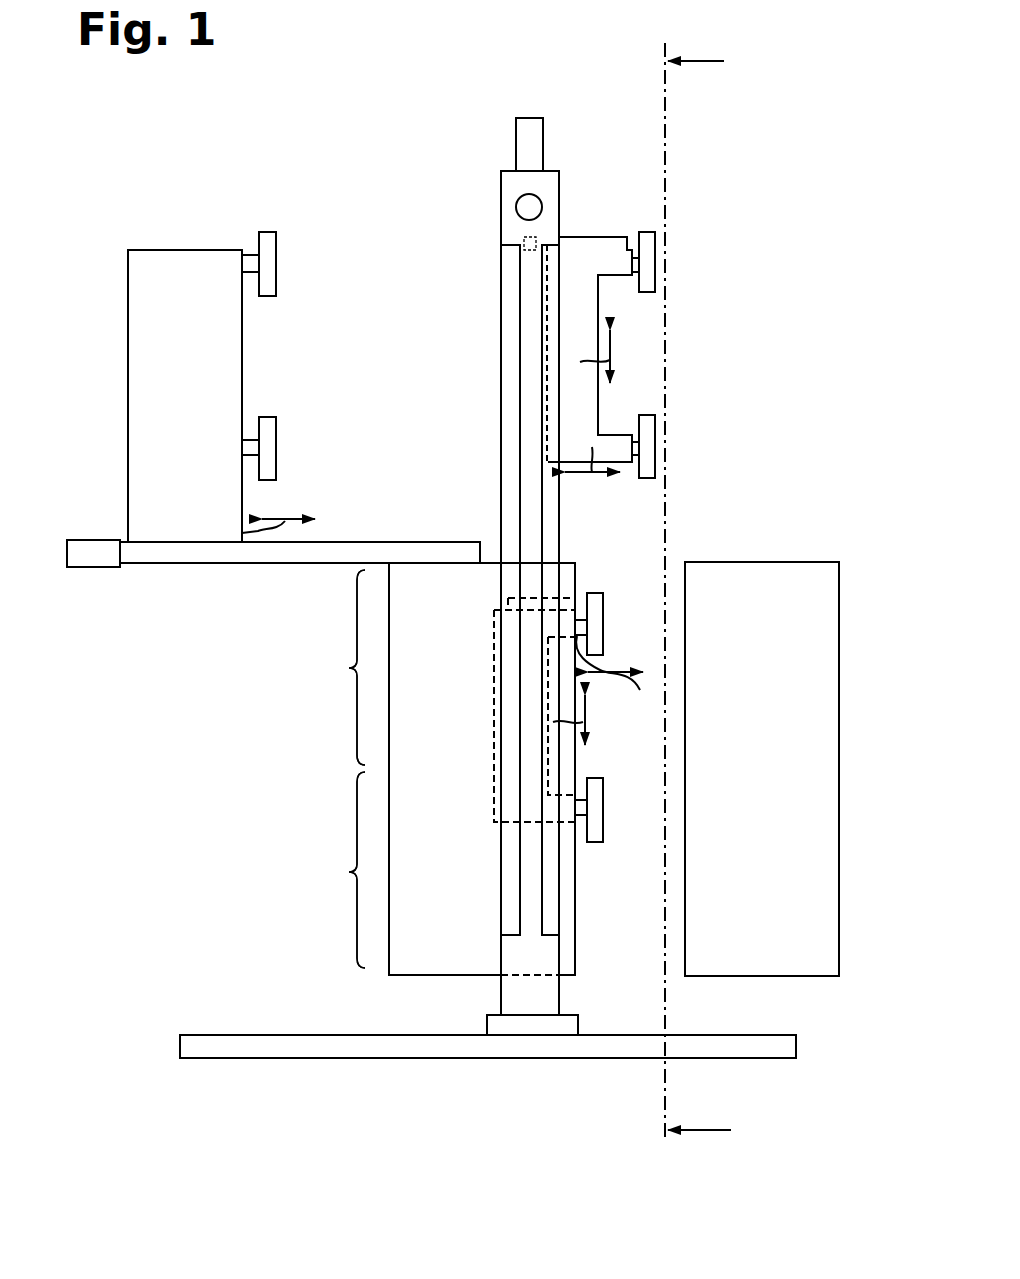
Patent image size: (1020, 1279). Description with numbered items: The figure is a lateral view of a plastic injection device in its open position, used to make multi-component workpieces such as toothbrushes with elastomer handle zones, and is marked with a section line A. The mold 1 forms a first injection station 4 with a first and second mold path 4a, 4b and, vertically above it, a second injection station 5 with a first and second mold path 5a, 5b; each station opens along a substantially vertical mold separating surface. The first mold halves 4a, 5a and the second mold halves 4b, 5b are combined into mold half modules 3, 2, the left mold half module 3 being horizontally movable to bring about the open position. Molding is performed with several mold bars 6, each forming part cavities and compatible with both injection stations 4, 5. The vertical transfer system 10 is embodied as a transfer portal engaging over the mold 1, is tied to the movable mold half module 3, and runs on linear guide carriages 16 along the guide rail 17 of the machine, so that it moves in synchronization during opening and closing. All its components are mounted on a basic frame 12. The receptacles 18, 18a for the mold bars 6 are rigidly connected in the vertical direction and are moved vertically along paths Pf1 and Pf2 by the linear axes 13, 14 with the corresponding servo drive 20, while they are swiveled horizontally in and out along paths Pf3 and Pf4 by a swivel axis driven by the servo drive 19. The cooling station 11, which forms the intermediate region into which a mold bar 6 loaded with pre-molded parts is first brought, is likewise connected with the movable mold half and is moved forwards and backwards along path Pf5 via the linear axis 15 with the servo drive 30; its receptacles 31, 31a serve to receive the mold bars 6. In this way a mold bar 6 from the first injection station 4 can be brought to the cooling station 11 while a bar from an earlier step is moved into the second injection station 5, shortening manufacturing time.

The mold 1 is at (742, 520).
The mold half module 2 is at (802, 972).
The mold half module 3 is at (432, 968).
The first injection station 4 is at (325, 870).
The first mold path 4a is at (357, 870).
The second mold path 4b is at (781, 890).
The second injection station 5 is at (325, 667).
The first mold path 5a is at (357, 667).
The second mold path 5b is at (781, 684).
The mold bar 6 is at (272, 245).
The transfer system 10 is at (488, 258).
The cooling station 11 is at (146, 248).
The basic frame 12 is at (507, 182).
The linear axis 13 is at (552, 540).
The linear axis 14 is at (507, 467).
The linear axis 15 is at (200, 556).
The linear guide carriage 16 is at (572, 1023).
The guide rail 17 is at (212, 1042).
The receptacle 18 is at (568, 330).
The receptacle 18a is at (495, 752).
The servo drive 19 is at (540, 133).
The servo drive 20 is at (532, 207).
The servo drive 30 is at (95, 548).
The receptacle 31 is at (250, 445).
The receptacle 31a is at (250, 262).
The Path 1 Pf1 is at (624, 356).
The Path 2 Pf2 is at (595, 720).
The Path 3 Pf3 is at (594, 478).
The Path 4 Pf4 is at (634, 673).
The Path 5 Pf5 is at (280, 510).
The section line A- A is at (698, 580).